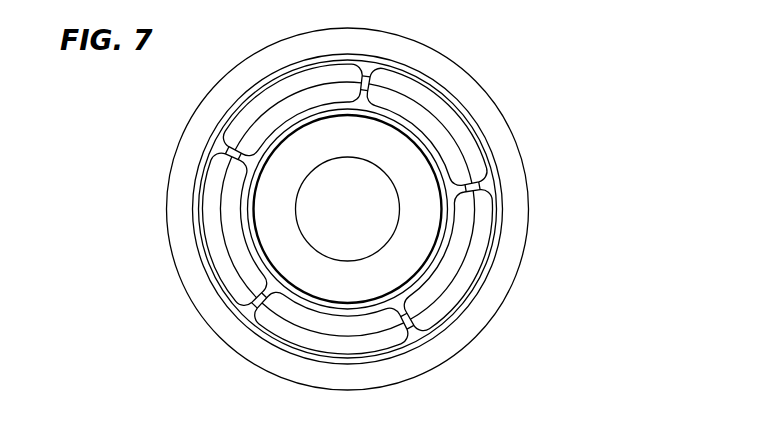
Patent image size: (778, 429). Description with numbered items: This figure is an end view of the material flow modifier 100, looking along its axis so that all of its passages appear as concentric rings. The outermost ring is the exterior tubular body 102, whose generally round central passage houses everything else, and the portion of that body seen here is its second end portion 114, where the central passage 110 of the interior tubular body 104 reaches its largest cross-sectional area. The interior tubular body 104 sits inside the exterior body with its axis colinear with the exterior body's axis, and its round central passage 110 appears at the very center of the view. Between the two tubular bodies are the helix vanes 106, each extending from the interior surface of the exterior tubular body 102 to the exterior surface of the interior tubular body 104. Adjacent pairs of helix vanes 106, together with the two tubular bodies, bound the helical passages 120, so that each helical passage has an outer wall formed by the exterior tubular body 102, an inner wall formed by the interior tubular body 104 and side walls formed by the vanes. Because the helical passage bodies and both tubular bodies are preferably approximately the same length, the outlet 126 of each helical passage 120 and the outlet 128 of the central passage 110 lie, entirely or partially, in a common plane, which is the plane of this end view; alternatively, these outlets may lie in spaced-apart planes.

The material flow modifier 100 is at (503, 70).
The exterior tubular body 102 is at (512, 192).
The interior tubular body 104 is at (378, 270).
The helix vanes 106 is at (250, 158).
The central passage of the interior tubular body 110 is at (348, 209).
The second end portion 114 is at (492, 142).
The helical passages 120 is at (224, 261).
The outlet of the helical passage 126 is at (478, 280).
The outlet of the central passage 128 is at (433, 242).